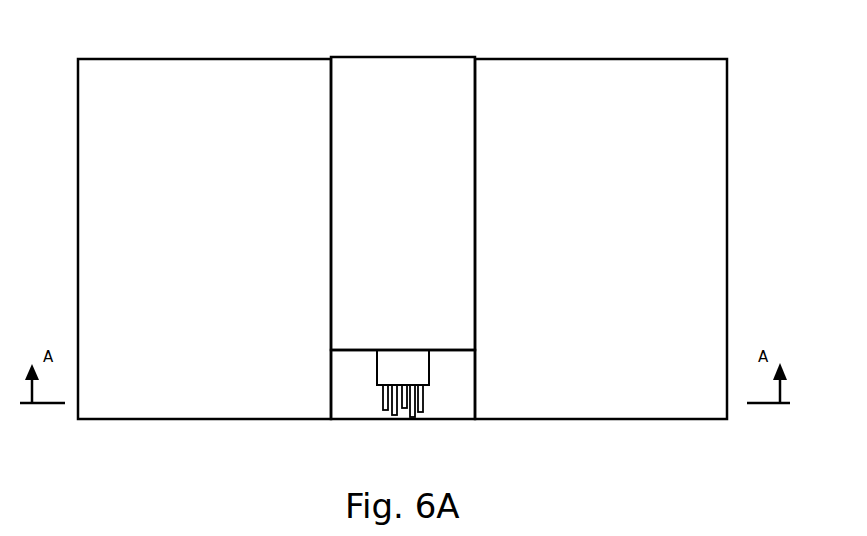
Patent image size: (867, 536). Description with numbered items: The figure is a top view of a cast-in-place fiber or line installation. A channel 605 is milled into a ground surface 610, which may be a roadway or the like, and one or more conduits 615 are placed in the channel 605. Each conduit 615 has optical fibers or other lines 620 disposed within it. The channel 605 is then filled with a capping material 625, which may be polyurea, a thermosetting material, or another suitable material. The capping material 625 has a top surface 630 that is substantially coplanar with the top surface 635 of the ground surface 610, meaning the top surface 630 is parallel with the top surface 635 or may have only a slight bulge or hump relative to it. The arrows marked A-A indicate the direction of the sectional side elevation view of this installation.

The channel 605 is at (403, 409).
The ground surface 610 is at (420, 216).
The conduit 615 is at (415, 356).
The optical fibers 620 is at (423, 425).
The capping material 625 is at (426, 240).
The top surface of capping material 630 is at (421, 238).
The top surface of ground surface 635 is at (217, 340).